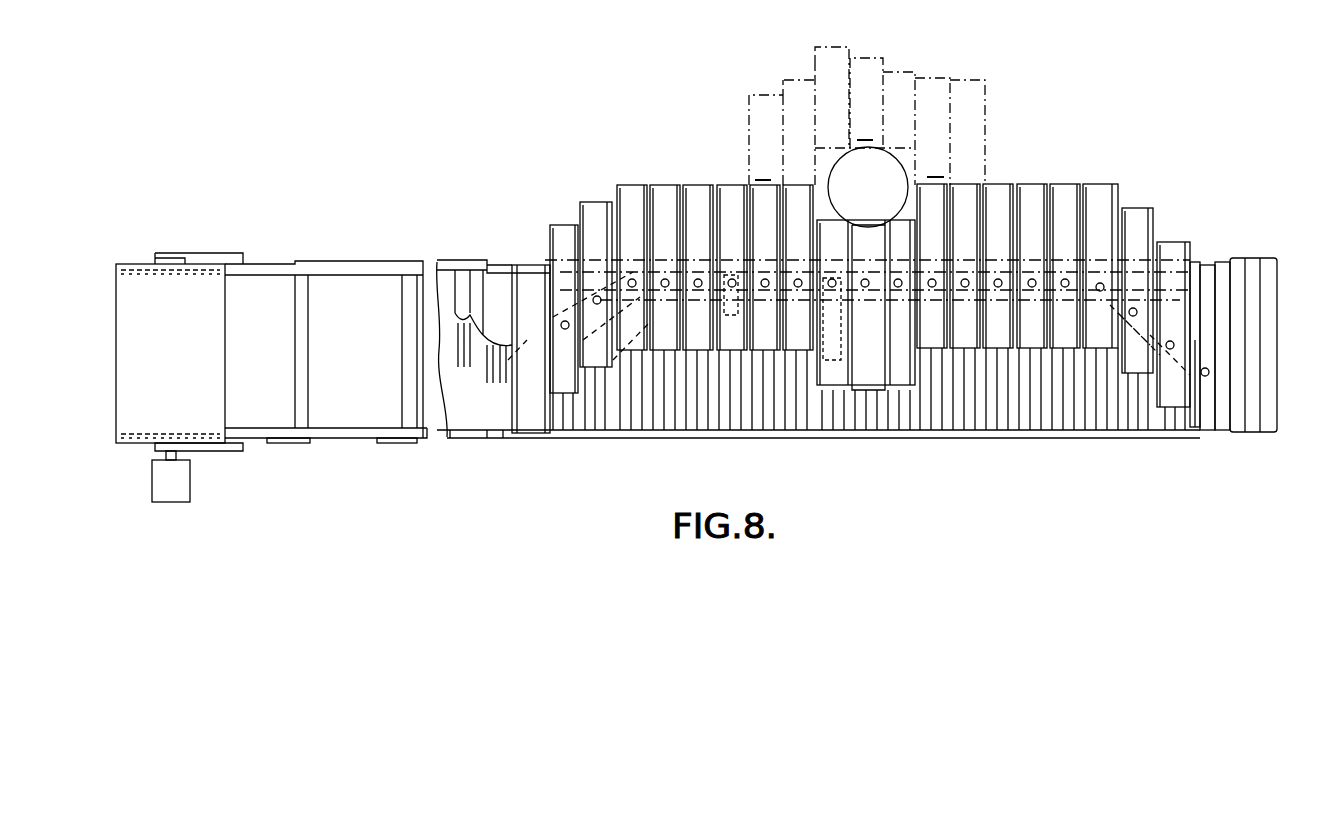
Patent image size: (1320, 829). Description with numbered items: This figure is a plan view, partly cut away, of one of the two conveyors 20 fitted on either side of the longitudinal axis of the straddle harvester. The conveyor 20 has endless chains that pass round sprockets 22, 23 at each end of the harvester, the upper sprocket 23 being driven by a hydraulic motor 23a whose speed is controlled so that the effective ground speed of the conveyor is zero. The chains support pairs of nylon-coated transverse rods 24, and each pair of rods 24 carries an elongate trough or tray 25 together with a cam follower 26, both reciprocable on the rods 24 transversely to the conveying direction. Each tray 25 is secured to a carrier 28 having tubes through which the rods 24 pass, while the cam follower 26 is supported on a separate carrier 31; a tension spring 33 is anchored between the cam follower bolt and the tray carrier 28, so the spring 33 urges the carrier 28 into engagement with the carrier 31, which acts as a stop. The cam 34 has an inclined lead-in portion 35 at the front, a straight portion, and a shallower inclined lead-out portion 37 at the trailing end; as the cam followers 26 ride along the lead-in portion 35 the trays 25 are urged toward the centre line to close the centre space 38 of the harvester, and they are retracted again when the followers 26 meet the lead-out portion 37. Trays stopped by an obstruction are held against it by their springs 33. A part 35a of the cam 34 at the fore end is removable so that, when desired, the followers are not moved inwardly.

The conveyor 20 is at (1006, 135).
The sprocket 22 is at (1240, 452).
The driven sprocket 23 is at (146, 262).
The hydraulic motor 23a is at (185, 478).
The transverse rods 24 is at (652, 410).
The tray 25 is at (664, 210).
The cam follower 26 is at (665, 277).
The carrier 28 is at (722, 360).
The carrier 31 is at (813, 260).
The tension spring 33 is at (733, 438).
The cam 34 is at (1150, 243).
The lead-in portion 35 is at (1197, 258).
The removable cam part 35a is at (1173, 268).
The lead-out portion 37 is at (545, 337).
The centre space 38 is at (1152, 171).